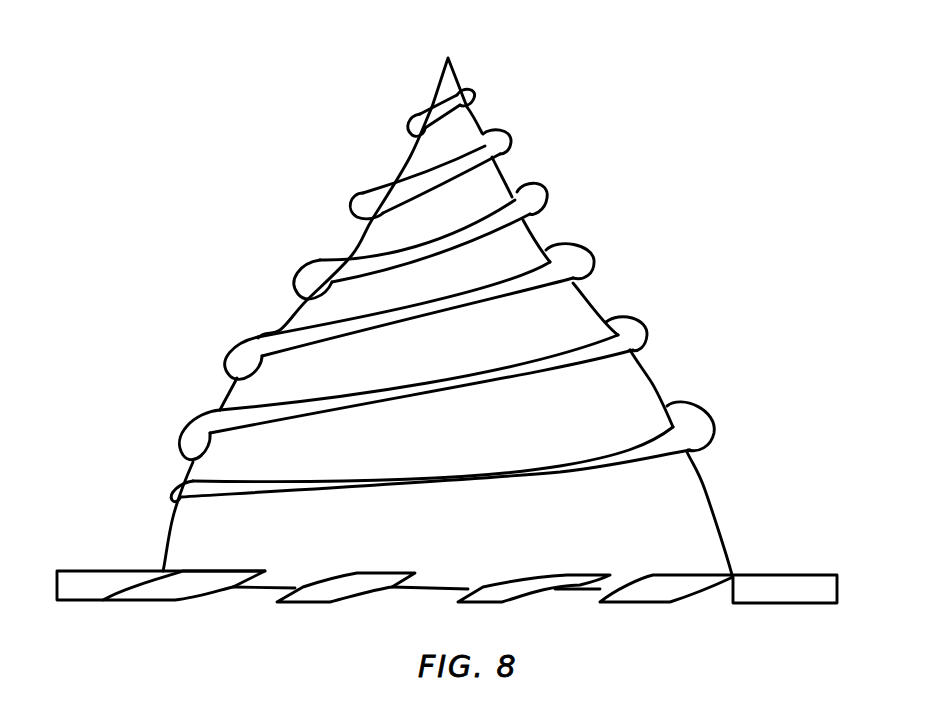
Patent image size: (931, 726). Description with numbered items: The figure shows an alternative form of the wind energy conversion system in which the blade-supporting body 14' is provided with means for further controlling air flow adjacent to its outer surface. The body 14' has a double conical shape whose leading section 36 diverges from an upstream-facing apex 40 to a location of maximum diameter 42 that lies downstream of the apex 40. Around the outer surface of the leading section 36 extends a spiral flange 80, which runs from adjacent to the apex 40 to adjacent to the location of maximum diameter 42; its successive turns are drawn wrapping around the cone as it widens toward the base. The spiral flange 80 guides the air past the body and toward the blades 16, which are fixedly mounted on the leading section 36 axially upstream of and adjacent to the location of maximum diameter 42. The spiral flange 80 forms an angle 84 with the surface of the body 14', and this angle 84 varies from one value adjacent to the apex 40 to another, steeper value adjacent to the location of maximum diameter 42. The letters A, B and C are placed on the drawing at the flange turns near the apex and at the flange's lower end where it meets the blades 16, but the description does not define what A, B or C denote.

The blade-supporting body 14' is at (494, 267).
The apex 40 is at (450, 58).
The leading section 36 is at (688, 517).
The location of maximum diameter 42 is at (160, 570).
The spiral flange 80 is at (572, 258).
The angle 84 is at (528, 268).
The blades 16 is at (797, 587).
The flange edge A is at (365, 205).
The spacing B is at (419, 158).
The flange end C is at (205, 580).